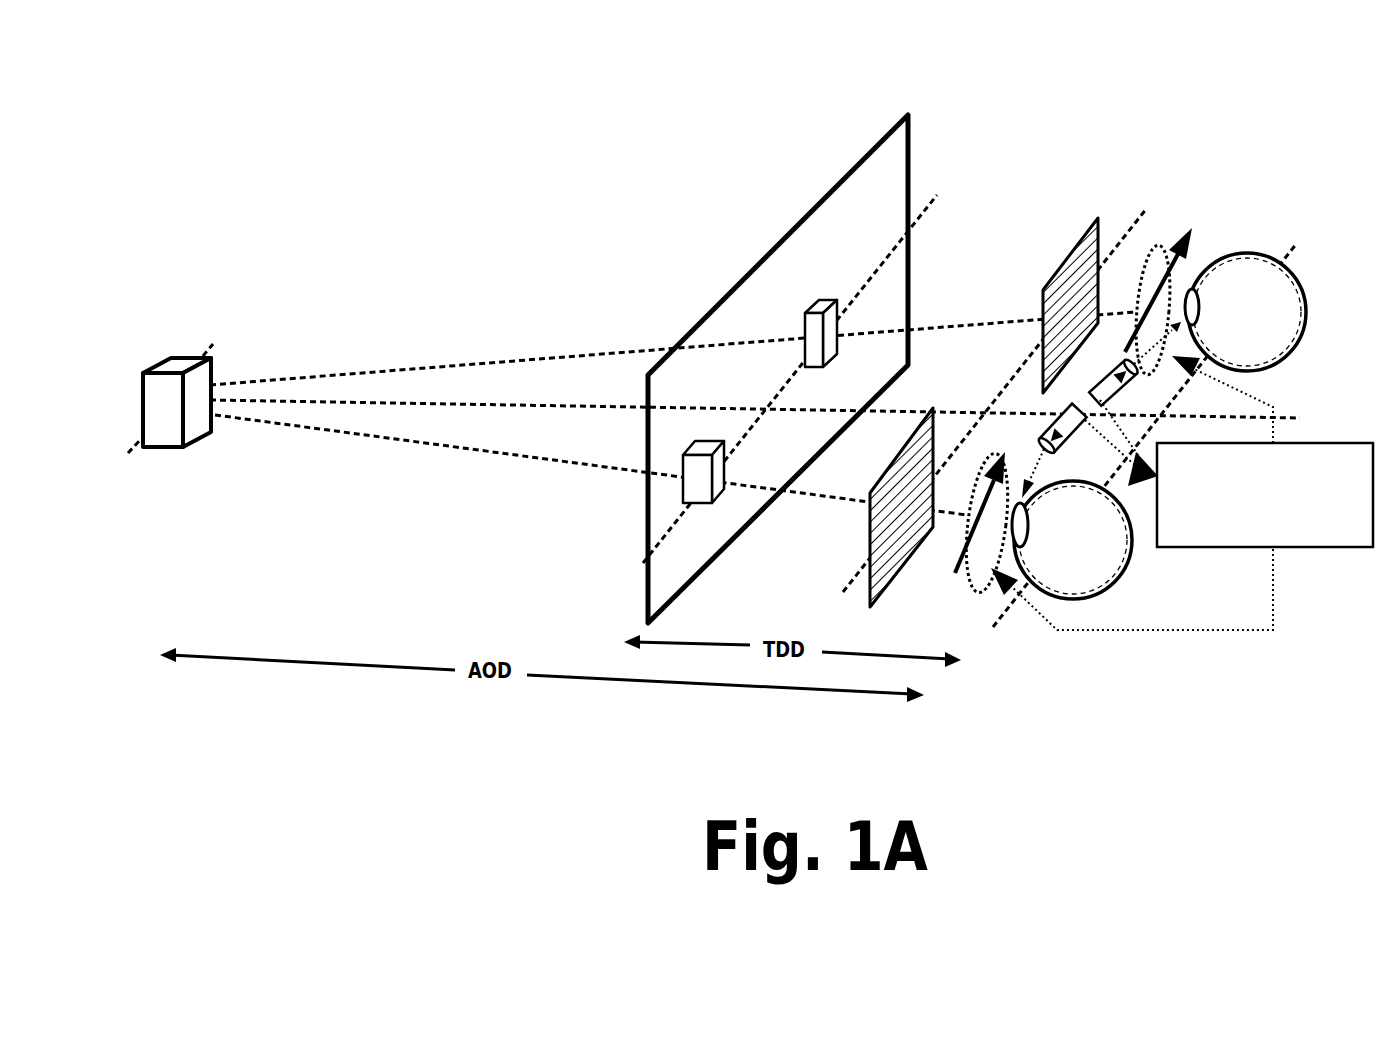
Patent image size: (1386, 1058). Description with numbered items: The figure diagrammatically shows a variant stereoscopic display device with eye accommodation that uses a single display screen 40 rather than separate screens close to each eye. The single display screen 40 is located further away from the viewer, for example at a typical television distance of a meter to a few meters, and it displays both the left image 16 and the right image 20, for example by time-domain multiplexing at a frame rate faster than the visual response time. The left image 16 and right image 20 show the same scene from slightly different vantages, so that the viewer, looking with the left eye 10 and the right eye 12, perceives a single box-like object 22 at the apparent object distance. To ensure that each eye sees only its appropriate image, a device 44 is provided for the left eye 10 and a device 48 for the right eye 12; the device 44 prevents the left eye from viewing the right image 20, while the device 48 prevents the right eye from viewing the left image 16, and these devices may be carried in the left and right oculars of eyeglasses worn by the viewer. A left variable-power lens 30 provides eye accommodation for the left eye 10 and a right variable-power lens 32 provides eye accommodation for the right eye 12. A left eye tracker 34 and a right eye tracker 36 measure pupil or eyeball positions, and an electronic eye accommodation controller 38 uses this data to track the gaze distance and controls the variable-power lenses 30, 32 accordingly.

The left eye 10 is at (1095, 560).
The right eye 12 is at (1263, 335).
The left image 16 is at (717, 477).
The right image 20 is at (830, 327).
The box-like object 22 is at (200, 387).
The left variable-power lens 30 is at (987, 575).
The right variable-power lens 32 is at (1153, 247).
The left eye tracker 34 is at (1055, 428).
The right eye tracker 36 is at (1098, 387).
The electronic eye accommodation controller 38 is at (1300, 548).
The single display screen 40 is at (781, 241).
The device for the left eye 44 is at (870, 533).
The device for the right eye 48 is at (1077, 251).